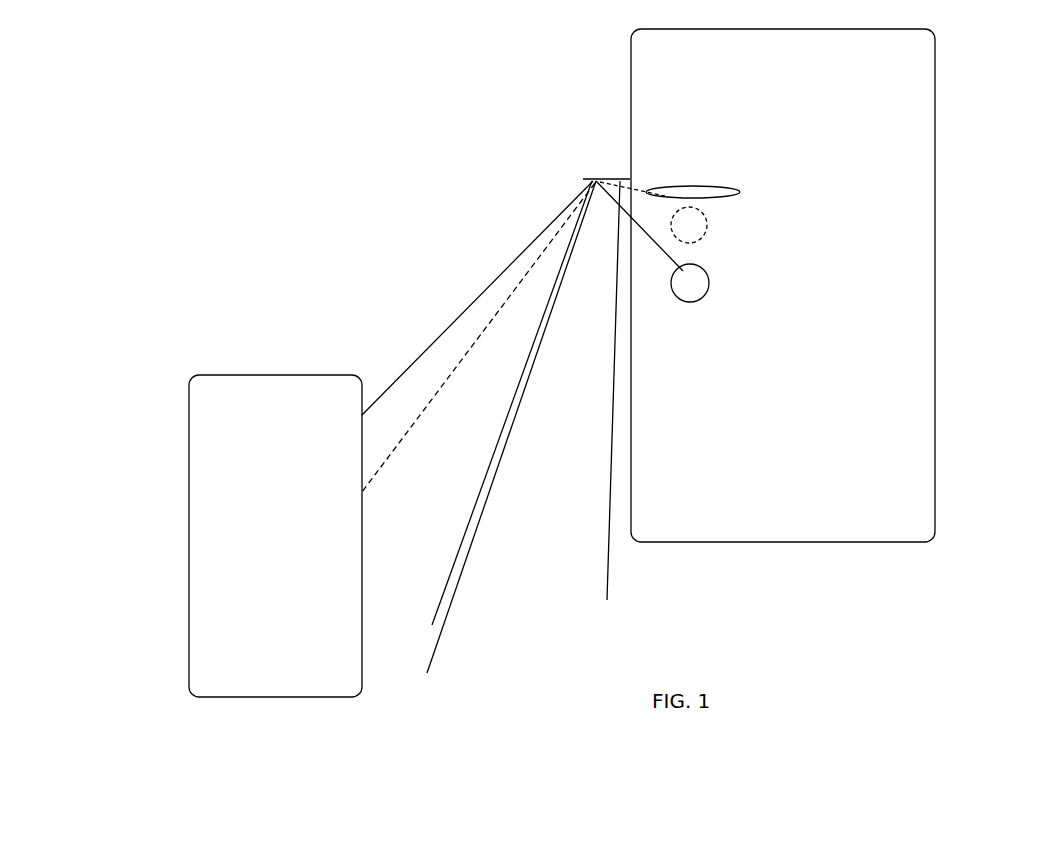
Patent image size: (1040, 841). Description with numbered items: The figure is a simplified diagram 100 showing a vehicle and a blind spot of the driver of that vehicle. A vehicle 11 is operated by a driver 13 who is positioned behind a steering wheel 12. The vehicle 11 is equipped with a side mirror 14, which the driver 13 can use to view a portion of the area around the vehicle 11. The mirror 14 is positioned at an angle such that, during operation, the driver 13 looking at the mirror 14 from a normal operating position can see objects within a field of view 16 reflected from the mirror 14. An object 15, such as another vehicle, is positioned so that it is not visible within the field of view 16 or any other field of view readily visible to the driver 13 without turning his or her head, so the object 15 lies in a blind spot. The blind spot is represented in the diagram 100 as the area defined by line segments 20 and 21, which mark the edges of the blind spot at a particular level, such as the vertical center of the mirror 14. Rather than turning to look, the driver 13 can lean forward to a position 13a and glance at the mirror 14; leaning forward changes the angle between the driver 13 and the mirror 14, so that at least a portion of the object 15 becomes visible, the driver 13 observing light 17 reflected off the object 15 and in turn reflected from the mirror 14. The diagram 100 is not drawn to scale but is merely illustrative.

The vehicle 11 is at (934, 352).
The steering wheel 12 is at (722, 190).
The driver 13 is at (703, 298).
The position 13a is at (712, 225).
The side mirror 14 is at (598, 179).
The object 15 is at (212, 373).
The field of view 16 is at (527, 573).
The light 17 is at (507, 413).
The line segment 20 is at (396, 380).
The line segment 21 is at (490, 323).
The diagram 100 is at (333, 802).